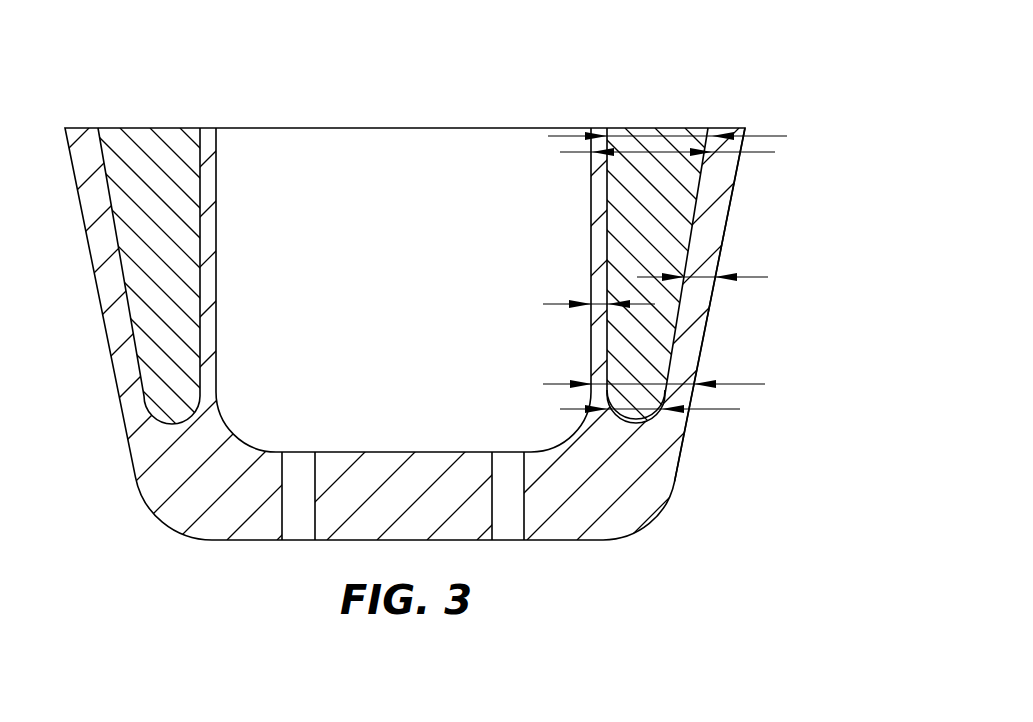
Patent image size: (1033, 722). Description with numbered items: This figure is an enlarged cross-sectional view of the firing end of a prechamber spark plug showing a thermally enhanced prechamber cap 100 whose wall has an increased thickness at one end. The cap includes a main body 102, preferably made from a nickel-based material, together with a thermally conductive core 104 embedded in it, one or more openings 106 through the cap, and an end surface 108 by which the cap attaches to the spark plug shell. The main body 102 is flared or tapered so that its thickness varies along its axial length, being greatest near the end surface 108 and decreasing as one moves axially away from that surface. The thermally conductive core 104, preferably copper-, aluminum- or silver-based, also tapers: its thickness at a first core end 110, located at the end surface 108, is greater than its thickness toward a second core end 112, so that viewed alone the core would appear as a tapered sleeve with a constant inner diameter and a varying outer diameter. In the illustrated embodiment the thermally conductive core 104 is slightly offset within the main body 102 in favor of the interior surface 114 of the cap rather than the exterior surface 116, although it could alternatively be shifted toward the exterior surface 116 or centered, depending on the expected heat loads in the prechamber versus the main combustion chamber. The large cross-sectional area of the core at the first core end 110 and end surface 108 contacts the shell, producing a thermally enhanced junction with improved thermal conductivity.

The thermally enhanced prechamber cap 100 is at (752, 92).
The main body 102 is at (620, 488).
The thermally conductive core 104 is at (635, 232).
The openings 106 is at (507, 468).
The end surface 108 is at (133, 128).
The first core end 110 is at (620, 128).
The second core end 112 is at (613, 422).
The interior surface 114 is at (590, 187).
The exterior surface 116 is at (733, 178).